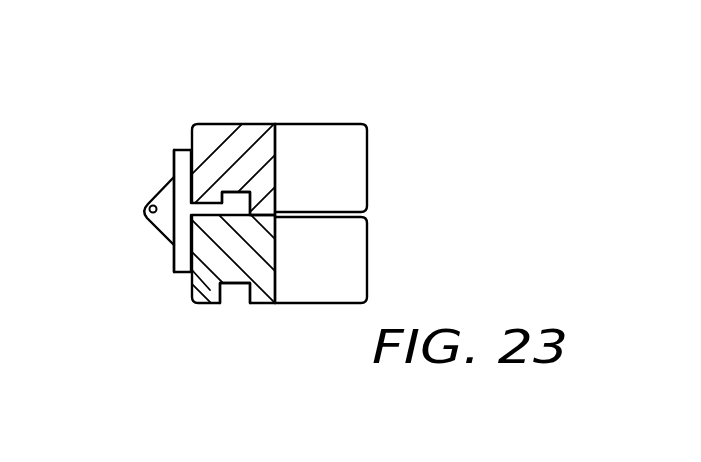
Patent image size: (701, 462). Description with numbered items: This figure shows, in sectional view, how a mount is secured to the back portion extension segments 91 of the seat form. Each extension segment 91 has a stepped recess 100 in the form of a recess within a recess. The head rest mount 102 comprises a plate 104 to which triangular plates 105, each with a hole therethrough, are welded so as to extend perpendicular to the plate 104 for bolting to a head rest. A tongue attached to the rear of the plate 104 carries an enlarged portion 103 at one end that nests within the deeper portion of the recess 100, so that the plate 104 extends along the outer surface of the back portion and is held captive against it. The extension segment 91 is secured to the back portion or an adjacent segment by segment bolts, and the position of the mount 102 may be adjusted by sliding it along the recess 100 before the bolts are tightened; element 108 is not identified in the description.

The back portion extension segment 91 is at (360, 158).
The stepped recess 100 is at (234, 205).
The head rest mount 102 is at (152, 158).
The enlarged portion 103 is at (232, 214).
The plate 104 is at (183, 150).
The triangular plate 105 is at (160, 228).
The leg 108 is at (196, 277).